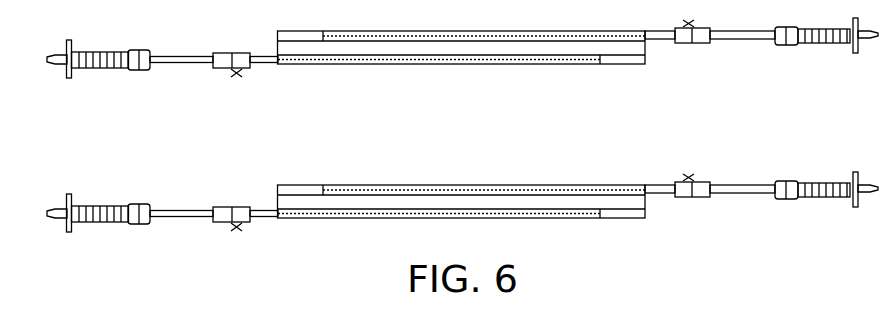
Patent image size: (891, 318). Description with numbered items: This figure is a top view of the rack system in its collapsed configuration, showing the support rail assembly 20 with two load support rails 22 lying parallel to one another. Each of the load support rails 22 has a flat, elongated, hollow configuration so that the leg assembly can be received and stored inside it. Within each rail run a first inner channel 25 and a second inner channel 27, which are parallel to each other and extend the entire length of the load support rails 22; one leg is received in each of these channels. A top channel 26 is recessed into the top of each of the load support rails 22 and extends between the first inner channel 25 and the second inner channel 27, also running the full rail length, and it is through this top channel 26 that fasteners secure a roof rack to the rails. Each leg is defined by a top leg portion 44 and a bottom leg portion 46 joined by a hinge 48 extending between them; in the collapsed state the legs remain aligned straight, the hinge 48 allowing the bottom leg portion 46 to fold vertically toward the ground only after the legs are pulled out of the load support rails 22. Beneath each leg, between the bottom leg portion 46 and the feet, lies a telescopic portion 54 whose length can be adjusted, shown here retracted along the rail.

The support rail assembly 20 is at (362, 76).
The load support rails 22 is at (563, 64).
The first inner channel 25 is at (304, 36).
The top channel 26 is at (468, 42).
The second inner channel 27 is at (638, 59).
The top leg portion 44 is at (655, 196).
The bottom leg portion 46 is at (745, 195).
The hinge 48 is at (703, 182).
The telescopic portion 54 is at (83, 64).